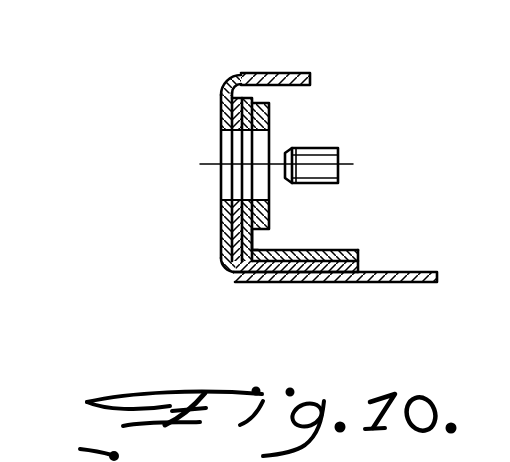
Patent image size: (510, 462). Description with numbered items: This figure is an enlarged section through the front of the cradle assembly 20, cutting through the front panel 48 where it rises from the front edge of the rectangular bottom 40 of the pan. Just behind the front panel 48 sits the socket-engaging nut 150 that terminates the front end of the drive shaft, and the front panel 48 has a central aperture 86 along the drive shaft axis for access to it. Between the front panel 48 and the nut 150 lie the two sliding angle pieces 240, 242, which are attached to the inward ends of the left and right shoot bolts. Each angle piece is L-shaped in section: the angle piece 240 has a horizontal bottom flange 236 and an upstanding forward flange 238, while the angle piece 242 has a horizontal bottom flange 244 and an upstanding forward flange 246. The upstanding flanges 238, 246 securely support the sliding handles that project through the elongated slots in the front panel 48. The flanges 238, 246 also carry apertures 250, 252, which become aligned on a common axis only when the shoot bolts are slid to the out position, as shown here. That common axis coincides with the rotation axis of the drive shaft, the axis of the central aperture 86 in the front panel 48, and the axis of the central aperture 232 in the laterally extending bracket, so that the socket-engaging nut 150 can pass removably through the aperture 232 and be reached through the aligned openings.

The cradle assembly 20 is at (373, 71).
The rectangular bottom 40 is at (407, 283).
The front panel 48 is at (222, 88).
The central aperture 86 is at (228, 192).
The socket-engaging nut 150 is at (338, 154).
The central aperture 232 is at (271, 152).
The horizontal bottom flange 236 is at (342, 250).
The upstanding forward flange 238 is at (237, 90).
The sliding angle piece 240 is at (254, 245).
The sliding angle piece 242 is at (245, 273).
The horizontal bottom flange 244 is at (358, 266).
The upstanding forward flange 246 is at (252, 98).
The aperture 250 is at (240, 198).
The aperture 252 is at (245, 130).